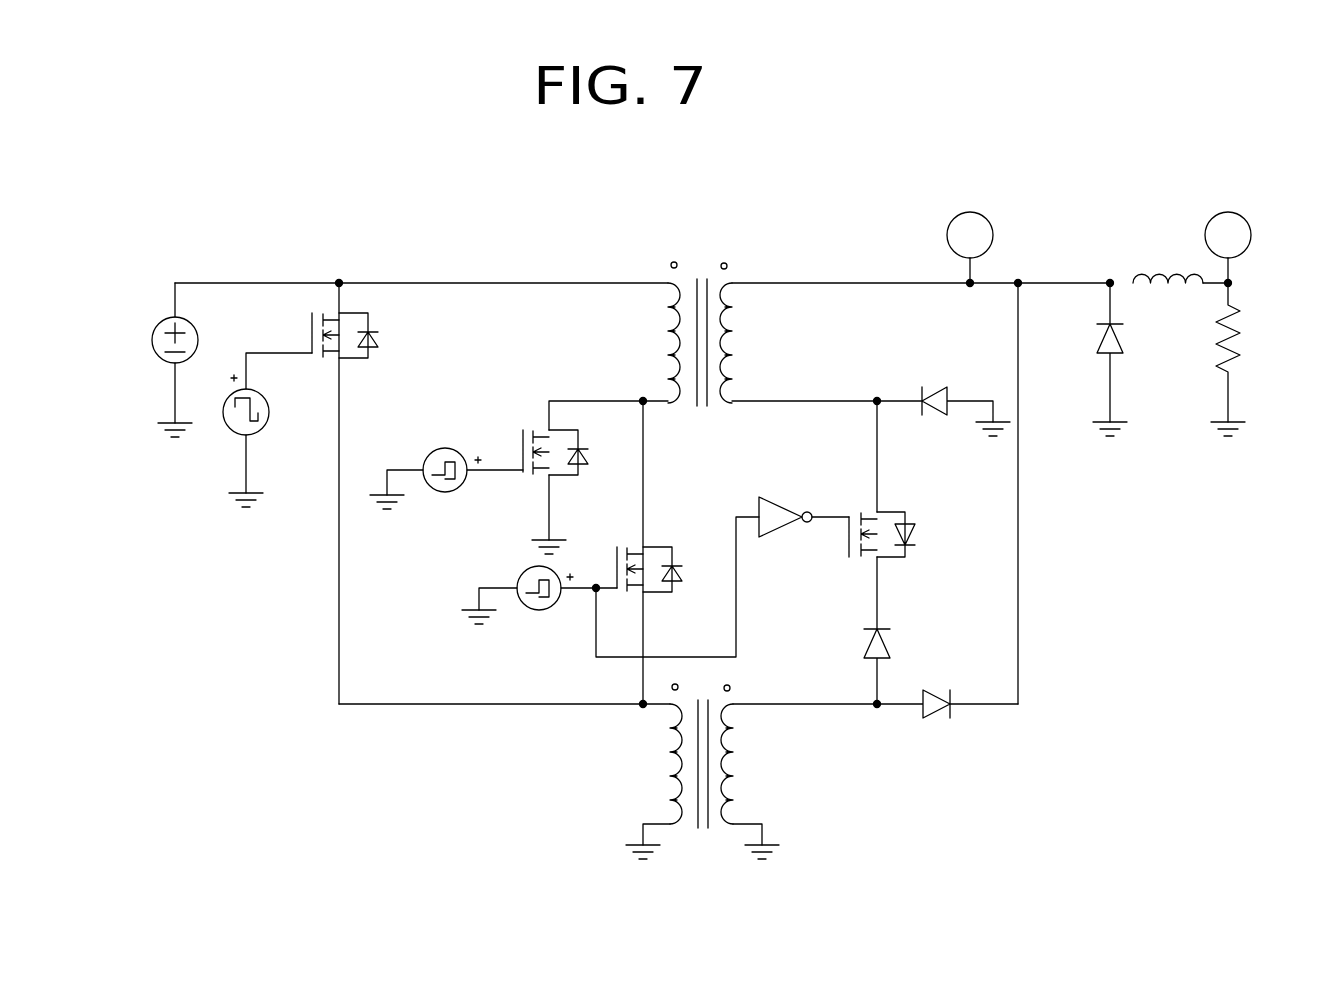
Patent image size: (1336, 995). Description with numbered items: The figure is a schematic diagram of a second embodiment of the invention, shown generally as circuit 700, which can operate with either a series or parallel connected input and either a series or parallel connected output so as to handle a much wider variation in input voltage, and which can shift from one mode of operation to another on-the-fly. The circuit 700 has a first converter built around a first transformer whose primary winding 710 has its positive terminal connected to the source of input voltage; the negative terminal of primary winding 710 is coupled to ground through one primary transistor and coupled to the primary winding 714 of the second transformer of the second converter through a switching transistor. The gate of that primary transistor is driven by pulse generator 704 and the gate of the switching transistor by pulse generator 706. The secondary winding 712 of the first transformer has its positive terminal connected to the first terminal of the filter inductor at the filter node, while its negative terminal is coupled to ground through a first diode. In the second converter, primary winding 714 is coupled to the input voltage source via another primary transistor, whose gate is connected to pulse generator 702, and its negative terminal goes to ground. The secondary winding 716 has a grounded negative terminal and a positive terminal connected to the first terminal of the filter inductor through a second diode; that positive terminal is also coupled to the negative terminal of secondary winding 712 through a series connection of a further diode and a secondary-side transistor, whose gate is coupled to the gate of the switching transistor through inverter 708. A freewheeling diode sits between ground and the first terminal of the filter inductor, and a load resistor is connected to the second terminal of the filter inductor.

The circuit 700 is at (1143, 154).
The pulse generator 702 is at (269, 402).
The pulse generator 704 is at (449, 446).
The pulse generator 706 is at (518, 578).
The inverter 708 is at (782, 498).
The primary winding 710 is at (668, 332).
The secondary winding 712 is at (738, 331).
The primary winding 714 is at (659, 764).
The secondary winding 716 is at (739, 755).